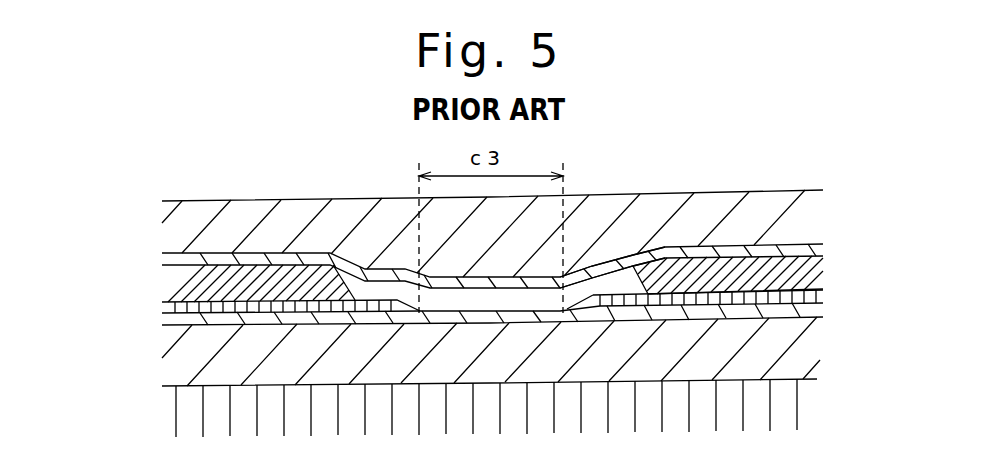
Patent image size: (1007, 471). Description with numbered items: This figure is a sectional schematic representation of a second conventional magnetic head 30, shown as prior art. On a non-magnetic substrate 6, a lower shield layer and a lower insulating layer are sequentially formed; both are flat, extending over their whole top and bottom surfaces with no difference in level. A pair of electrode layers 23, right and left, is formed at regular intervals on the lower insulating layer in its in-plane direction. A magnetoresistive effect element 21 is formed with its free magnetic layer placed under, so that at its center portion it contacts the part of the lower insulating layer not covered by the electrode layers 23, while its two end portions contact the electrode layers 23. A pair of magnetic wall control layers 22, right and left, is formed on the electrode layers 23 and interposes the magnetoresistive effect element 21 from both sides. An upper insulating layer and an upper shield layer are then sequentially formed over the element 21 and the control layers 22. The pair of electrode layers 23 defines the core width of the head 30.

The second conventional magnetic head 30 is at (741, 162).
The magnetoresistive effect element 21 is at (612, 286).
The magnetic wall control layers 22 is at (800, 270).
The electrode layers 23 is at (810, 297).
The non-magnetic substrate 6 is at (786, 405).